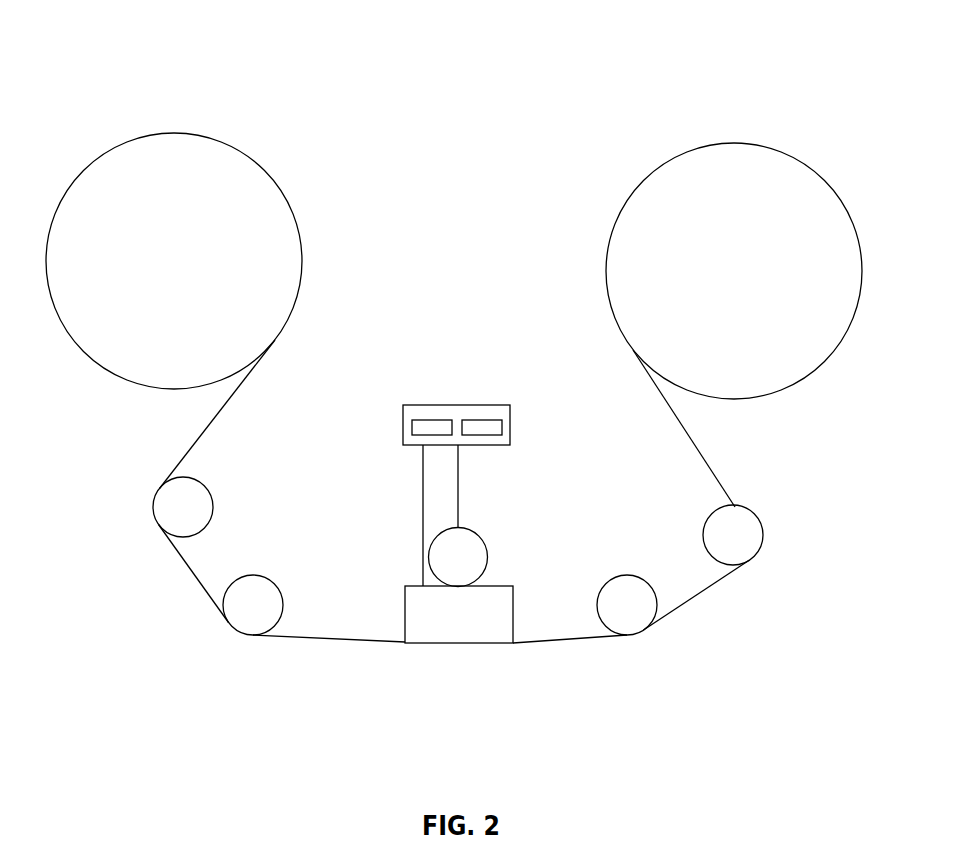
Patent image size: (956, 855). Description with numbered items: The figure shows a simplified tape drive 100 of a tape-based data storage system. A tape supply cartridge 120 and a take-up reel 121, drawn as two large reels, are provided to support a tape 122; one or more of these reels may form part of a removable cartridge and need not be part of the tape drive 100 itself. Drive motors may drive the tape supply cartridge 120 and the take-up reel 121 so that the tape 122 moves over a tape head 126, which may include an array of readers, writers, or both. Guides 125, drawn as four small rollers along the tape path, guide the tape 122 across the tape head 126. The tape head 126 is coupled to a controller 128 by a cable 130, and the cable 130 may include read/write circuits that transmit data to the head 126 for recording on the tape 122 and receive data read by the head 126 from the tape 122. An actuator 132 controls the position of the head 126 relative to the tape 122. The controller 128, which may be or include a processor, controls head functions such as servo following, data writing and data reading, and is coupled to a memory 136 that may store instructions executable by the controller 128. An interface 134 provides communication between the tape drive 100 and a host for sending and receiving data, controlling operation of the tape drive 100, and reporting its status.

The tape drive 100 is at (494, 112).
The tape supply cartridge 120 is at (290, 212).
The take-up reel 121 is at (791, 396).
The tape 122 is at (333, 640).
The guides 125 is at (253, 575).
The tape head 126 is at (513, 613).
The controller 128 is at (455, 405).
The cable 130 is at (423, 555).
The actuator 132 is at (479, 541).
The interface 134 is at (492, 418).
The memory 136 is at (424, 418).